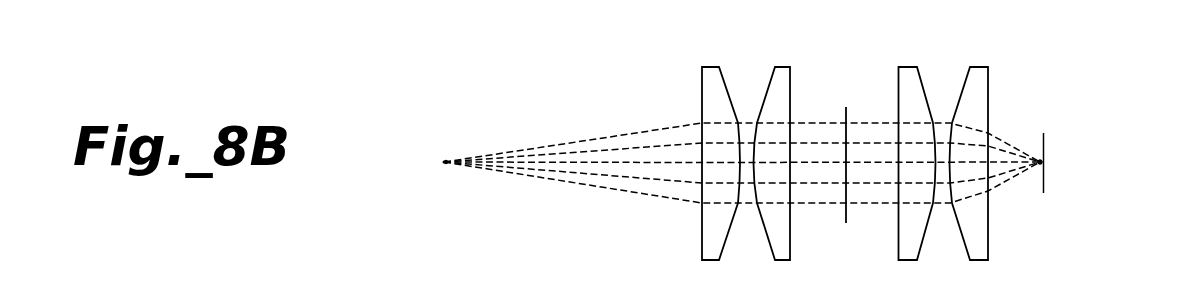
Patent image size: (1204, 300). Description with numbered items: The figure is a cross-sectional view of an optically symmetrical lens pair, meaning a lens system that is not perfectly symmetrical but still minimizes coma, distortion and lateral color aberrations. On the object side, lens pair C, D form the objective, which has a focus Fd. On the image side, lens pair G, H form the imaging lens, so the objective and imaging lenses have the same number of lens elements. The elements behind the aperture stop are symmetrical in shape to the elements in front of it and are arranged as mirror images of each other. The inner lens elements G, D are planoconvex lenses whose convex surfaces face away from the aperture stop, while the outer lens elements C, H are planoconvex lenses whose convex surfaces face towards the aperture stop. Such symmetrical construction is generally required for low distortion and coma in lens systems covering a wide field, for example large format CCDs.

The outer lens element C is at (712, 64).
The inner lens element D is at (783, 64).
The inner lens element G is at (907, 64).
The outer lens element H is at (980, 64).
The focus Fd is at (444, 162).